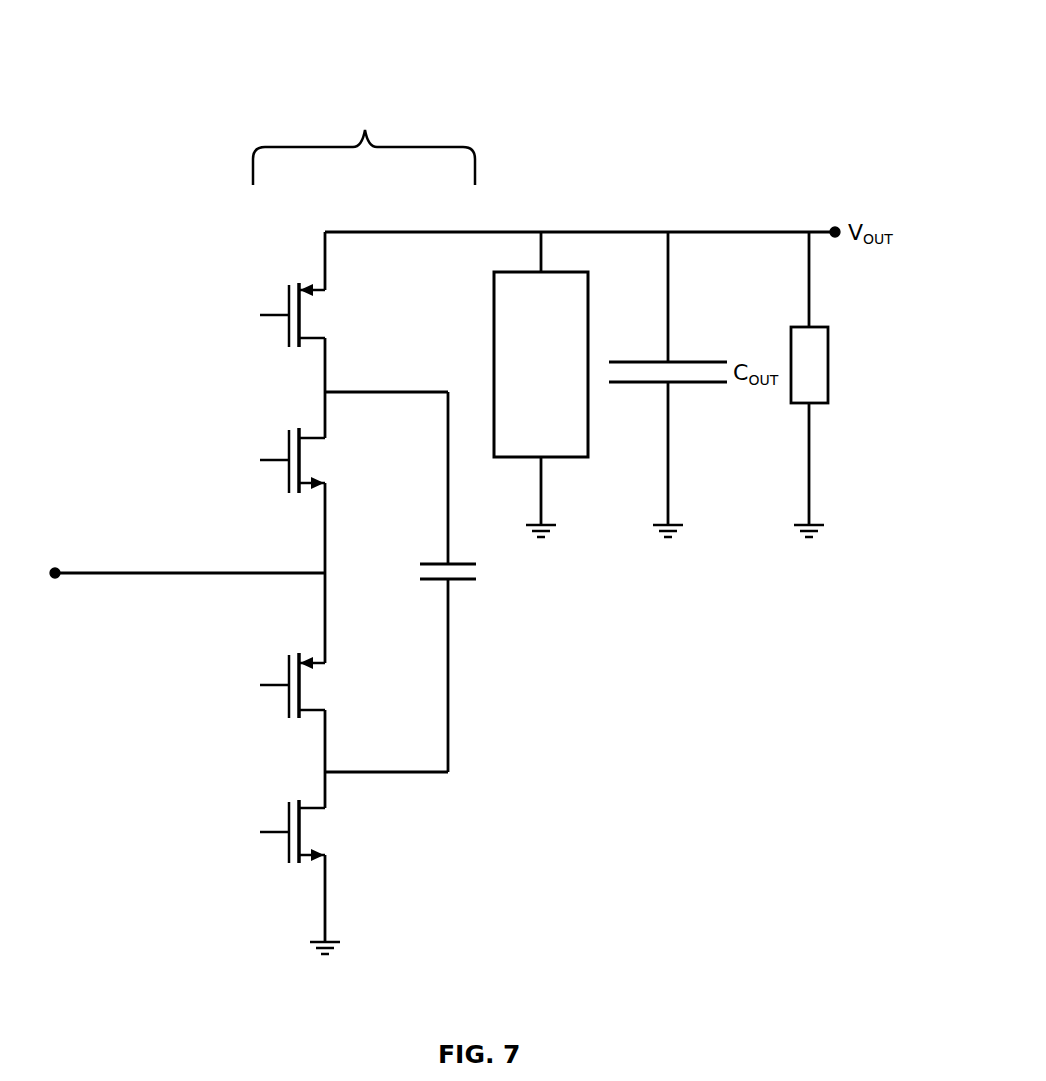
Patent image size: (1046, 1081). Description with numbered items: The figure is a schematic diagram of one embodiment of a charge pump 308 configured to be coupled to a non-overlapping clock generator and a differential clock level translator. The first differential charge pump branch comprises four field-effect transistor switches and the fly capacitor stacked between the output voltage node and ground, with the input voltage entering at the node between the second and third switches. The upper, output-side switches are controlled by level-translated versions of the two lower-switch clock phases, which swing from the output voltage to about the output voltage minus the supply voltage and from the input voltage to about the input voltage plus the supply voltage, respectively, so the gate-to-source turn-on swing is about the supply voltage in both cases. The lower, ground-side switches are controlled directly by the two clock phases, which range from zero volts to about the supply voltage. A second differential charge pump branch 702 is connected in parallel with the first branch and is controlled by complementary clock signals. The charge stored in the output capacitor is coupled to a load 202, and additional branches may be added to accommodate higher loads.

The charge pump 308 is at (182, 110).
The second differential charge pump branch 702 is at (580, 458).
The load 202 is at (828, 355).